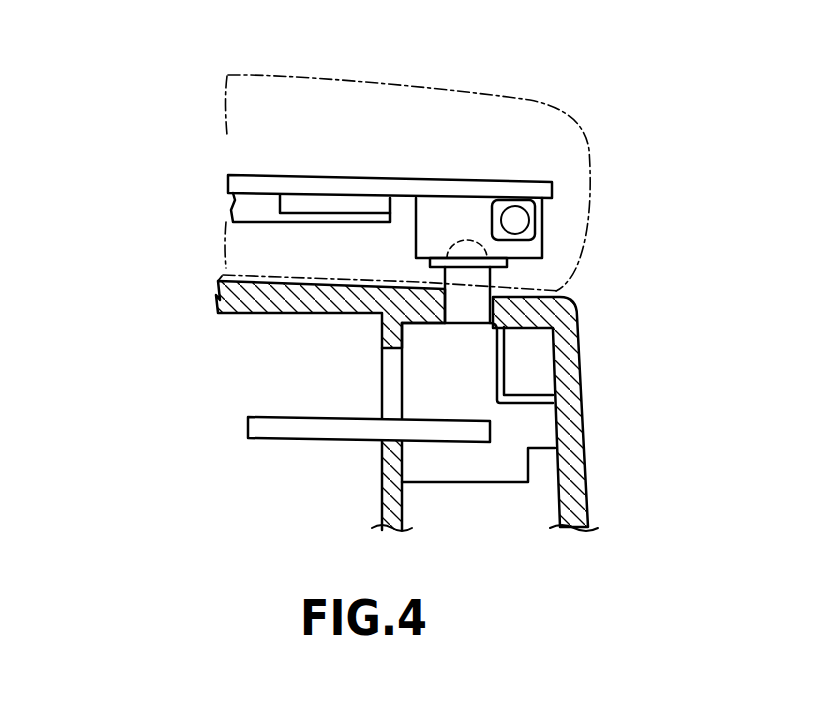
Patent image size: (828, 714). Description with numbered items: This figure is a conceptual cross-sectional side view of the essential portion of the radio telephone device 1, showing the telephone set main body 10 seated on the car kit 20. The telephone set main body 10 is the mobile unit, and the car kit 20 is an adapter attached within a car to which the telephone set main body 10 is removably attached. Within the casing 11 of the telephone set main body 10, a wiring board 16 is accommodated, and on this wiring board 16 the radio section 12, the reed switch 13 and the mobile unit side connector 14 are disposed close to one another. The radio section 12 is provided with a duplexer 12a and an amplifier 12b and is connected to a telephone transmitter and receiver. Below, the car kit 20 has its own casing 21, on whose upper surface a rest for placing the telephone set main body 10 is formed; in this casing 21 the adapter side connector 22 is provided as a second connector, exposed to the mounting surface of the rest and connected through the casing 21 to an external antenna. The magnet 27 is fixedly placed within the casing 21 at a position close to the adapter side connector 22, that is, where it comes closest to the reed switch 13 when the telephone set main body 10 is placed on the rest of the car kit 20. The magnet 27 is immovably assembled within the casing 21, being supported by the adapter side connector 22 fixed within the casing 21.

The radio telephone device 1 is at (158, 288).
The telephone set main body 10 is at (376, 174).
The casing 11 is at (358, 75).
The radio section 12 is at (336, 126).
The duplexer 12a is at (327, 203).
The amplifier 12b is at (245, 170).
The reed switch 13 is at (517, 222).
The mobile unit side connector 14 is at (463, 207).
The wiring board 16 is at (529, 179).
The car kit 20 is at (385, 431).
The casing 21 is at (573, 485).
The adapter side connector 22 is at (477, 472).
The magnet 27 is at (533, 360).